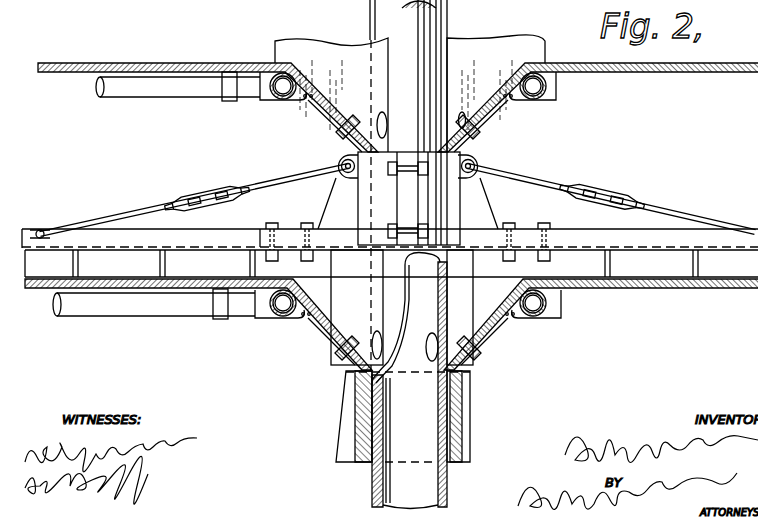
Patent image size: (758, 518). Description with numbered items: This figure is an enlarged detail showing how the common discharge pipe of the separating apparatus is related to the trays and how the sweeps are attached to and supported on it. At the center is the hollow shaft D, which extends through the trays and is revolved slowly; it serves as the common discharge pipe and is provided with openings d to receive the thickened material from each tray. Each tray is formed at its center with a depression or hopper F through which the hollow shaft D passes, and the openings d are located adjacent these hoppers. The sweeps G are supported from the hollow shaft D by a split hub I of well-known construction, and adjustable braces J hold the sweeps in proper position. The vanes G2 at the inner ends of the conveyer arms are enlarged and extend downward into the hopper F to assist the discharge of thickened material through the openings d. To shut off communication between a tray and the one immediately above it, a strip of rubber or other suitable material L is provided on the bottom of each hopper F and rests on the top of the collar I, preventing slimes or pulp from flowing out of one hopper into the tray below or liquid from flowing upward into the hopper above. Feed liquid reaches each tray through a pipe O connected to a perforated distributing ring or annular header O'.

The hollow shaft D is at (380, 22).
The vanes G2 is at (488, 40).
The openings d is at (385, 128).
The pipe O is at (156, 195).
The perforated distributing ring O' is at (394, 194).
The adjustable braces J is at (258, 182).
The sweeps G is at (232, 238).
The split hub I is at (318, 405).
The hopper F is at (310, 318).
The strip of rubber L is at (345, 357).